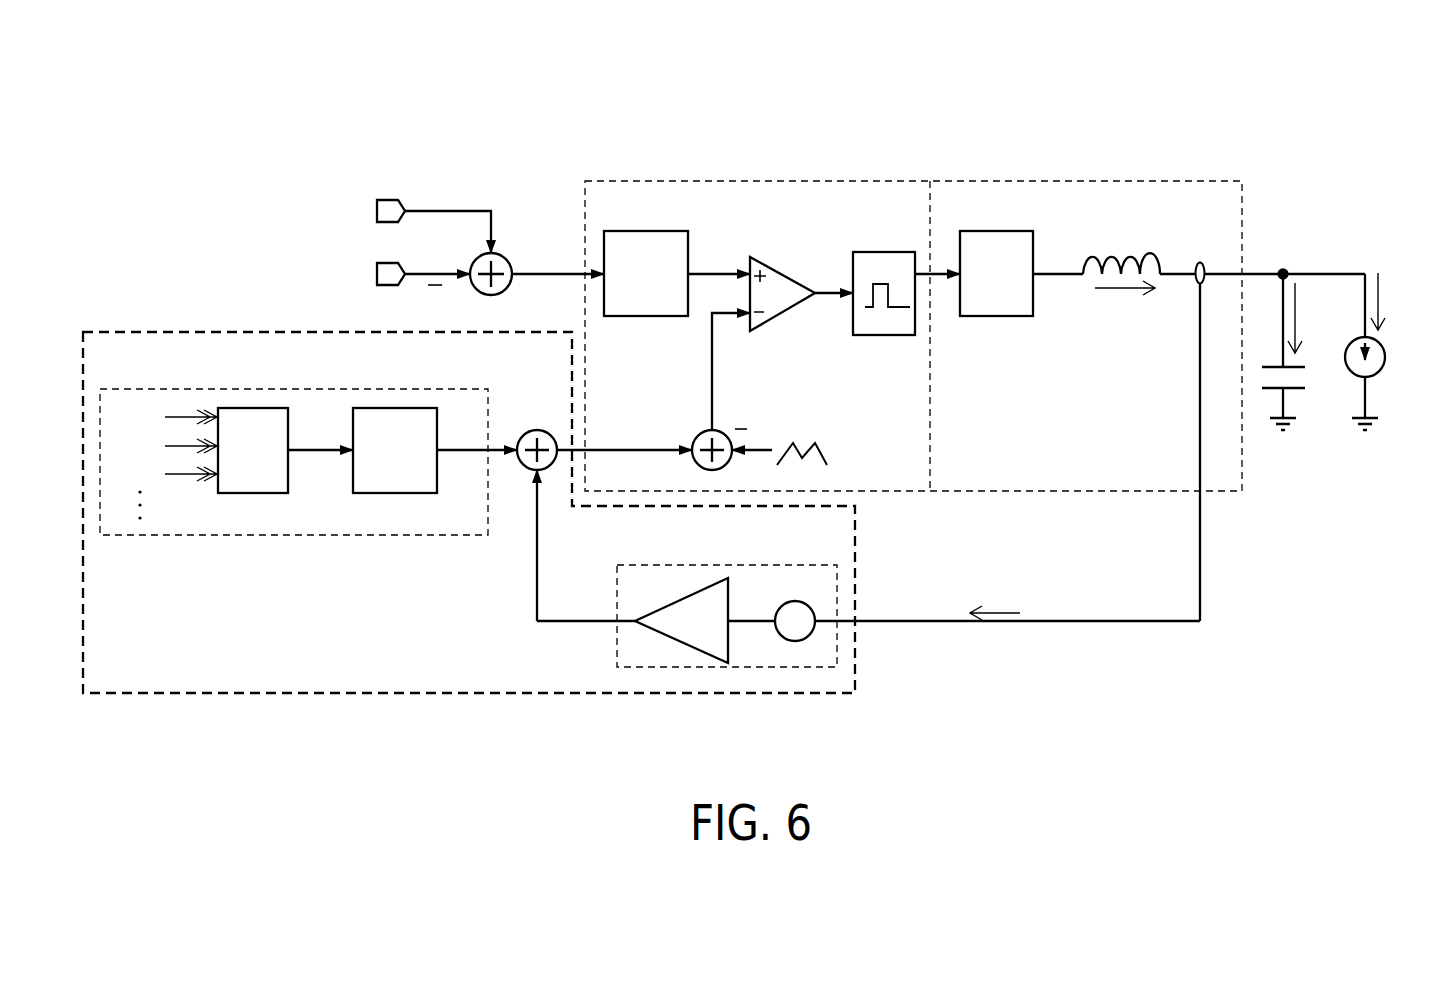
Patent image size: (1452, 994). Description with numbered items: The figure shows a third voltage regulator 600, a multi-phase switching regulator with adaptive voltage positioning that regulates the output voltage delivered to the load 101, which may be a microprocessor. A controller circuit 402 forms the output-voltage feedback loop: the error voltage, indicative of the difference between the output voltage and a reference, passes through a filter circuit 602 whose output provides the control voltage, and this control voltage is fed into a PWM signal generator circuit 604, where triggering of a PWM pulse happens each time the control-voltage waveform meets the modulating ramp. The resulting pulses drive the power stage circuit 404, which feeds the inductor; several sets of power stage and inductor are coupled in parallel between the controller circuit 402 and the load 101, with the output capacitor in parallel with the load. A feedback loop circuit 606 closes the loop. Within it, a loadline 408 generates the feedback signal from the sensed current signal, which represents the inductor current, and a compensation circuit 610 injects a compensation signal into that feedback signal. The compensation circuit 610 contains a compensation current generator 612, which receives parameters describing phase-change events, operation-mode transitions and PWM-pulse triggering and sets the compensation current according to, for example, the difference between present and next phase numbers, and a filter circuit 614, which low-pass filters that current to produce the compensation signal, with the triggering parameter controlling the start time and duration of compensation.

The voltage regulator 600 is at (1255, 80).
The controller circuit 402 is at (826, 181).
The filter circuit 602 is at (673, 231).
The PWM signal generator circuit 604 is at (766, 260).
The power stage circuit 404 is at (985, 231).
The feedback loop circuit 606 is at (855, 693).
The compensation circuit 610 is at (455, 395).
The compensation current generator 612 is at (252, 408).
The filter circuit 614 is at (393, 408).
The loadline 408 is at (787, 667).
The load 101 is at (1385, 357).